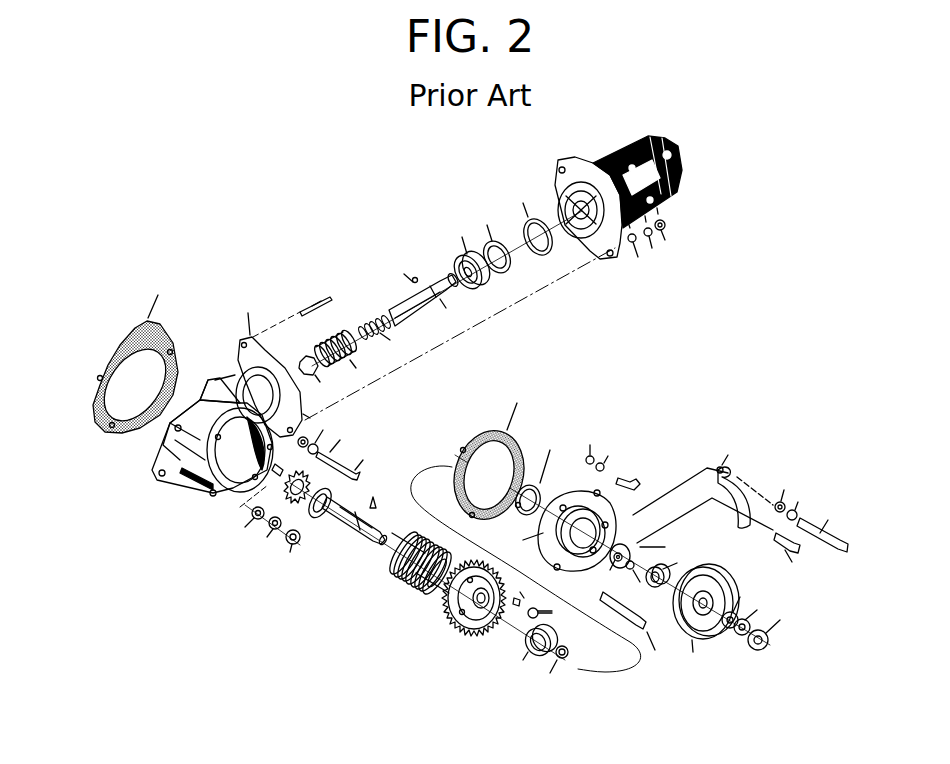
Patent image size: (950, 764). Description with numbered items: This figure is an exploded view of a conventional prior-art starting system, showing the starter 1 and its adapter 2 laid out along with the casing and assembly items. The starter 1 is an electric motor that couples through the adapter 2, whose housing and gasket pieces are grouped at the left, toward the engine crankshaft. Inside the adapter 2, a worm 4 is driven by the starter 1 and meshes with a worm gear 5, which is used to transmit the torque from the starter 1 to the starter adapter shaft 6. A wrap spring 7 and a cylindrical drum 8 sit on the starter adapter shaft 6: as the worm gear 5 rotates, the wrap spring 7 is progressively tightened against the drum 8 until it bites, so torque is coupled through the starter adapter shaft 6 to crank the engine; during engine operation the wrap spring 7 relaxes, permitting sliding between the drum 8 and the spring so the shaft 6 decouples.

The starter 1 is at (687, 175).
The adapter 2 is at (298, 262).
The worm 4 is at (352, 328).
The worm gear 5 is at (449, 630).
The starter adapter shaft 6 is at (346, 547).
The wrap spring 7 is at (404, 590).
The drum 8 is at (320, 520).